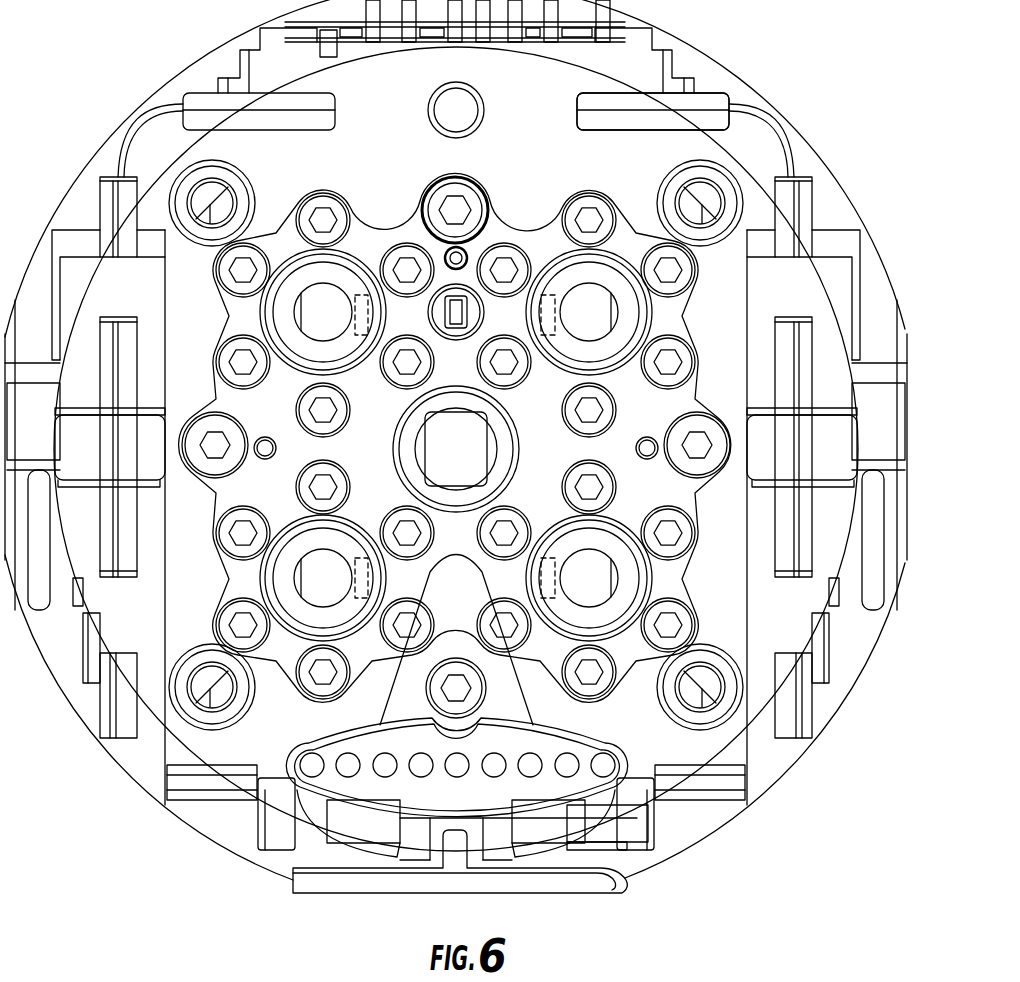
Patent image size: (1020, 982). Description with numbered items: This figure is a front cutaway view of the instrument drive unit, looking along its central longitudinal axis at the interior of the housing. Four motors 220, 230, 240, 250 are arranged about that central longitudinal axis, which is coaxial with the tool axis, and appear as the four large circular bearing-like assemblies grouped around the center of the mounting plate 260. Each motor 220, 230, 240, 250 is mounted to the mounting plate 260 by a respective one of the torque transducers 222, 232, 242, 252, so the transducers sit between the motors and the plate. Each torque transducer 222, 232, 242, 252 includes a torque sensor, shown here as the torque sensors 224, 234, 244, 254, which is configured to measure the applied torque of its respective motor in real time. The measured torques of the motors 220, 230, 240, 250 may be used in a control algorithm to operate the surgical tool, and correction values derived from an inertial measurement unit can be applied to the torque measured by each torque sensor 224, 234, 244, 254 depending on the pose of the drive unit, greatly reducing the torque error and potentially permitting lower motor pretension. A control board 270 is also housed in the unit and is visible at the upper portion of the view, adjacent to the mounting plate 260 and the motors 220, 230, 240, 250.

The motor 220 is at (322, 277).
The torque transducer 222 is at (372, 253).
The torque sensor 224 is at (366, 278).
The motor 230 is at (322, 604).
The torque transducer 232 is at (305, 612).
The torque sensor 234 is at (293, 857).
The motor 240 is at (618, 638).
The torque transducer 242 is at (640, 572).
The torque sensor 244 is at (553, 598).
The motor 250 is at (623, 310).
The torque transducer 252 is at (622, 255).
The torque sensor 254 is at (543, 294).
The mounting plate 260 is at (720, 510).
The control board 270 is at (705, 123).